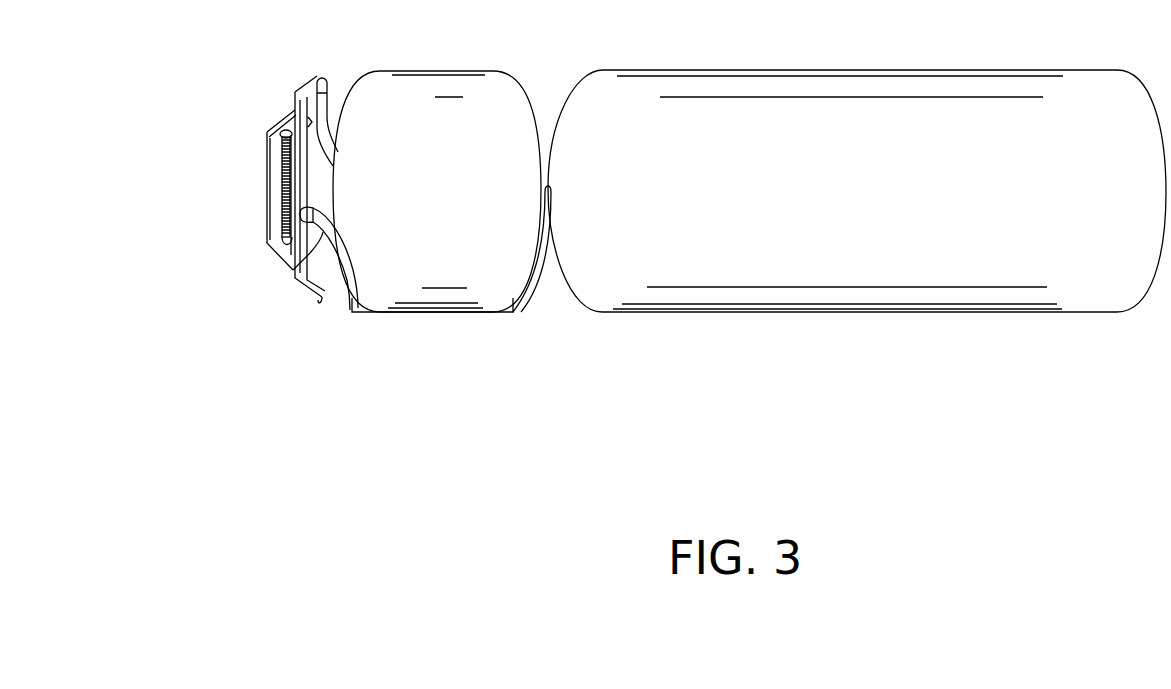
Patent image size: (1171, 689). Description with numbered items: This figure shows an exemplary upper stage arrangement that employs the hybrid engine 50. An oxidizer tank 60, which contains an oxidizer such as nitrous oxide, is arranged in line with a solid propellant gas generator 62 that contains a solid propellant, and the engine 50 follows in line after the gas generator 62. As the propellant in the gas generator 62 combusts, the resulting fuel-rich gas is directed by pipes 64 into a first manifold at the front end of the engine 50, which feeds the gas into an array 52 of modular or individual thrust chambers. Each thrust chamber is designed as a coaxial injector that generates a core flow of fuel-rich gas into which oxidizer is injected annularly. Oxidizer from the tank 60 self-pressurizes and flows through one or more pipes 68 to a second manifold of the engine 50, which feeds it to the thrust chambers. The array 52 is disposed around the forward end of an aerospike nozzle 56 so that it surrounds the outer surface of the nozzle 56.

The engine 50 is at (268, 263).
The array 52 is at (303, 298).
The aerospike nozzle 56 is at (276, 122).
The oxidizer tank 60 is at (697, 315).
The solid propellant gas generator 62 is at (497, 63).
The pipes 64 is at (329, 97).
The pipes 68 is at (535, 296).